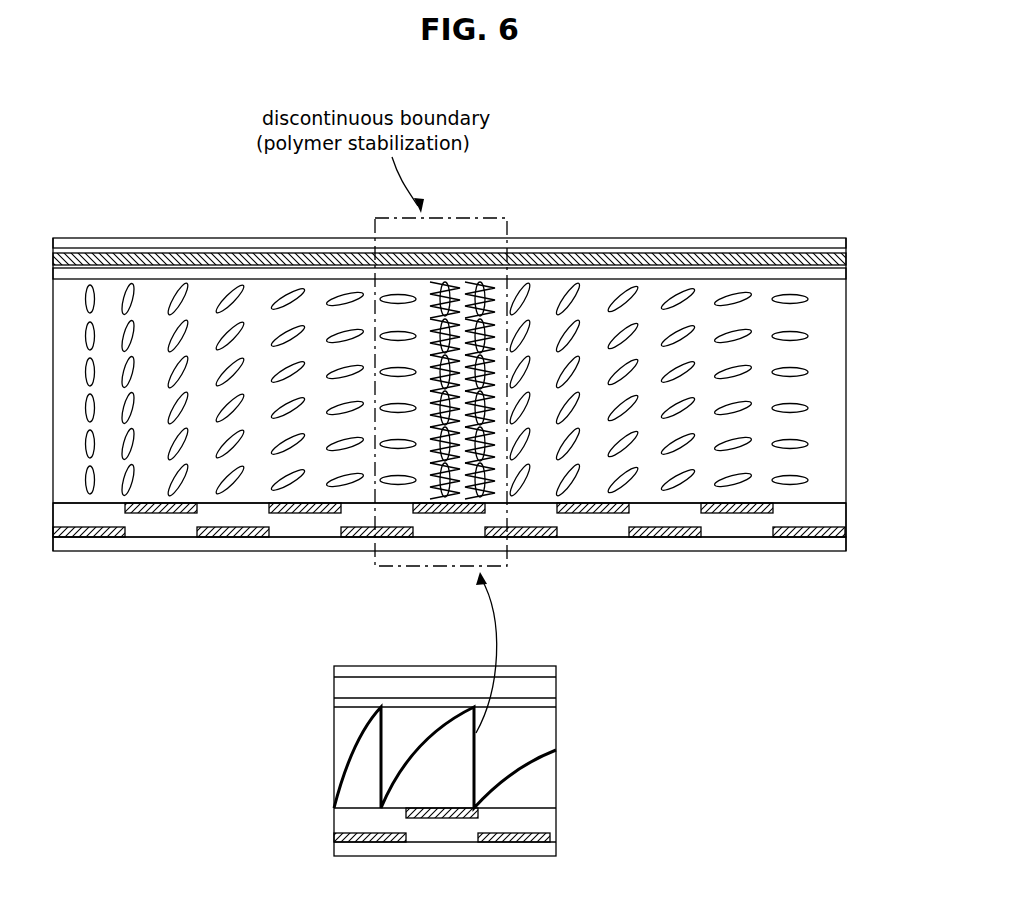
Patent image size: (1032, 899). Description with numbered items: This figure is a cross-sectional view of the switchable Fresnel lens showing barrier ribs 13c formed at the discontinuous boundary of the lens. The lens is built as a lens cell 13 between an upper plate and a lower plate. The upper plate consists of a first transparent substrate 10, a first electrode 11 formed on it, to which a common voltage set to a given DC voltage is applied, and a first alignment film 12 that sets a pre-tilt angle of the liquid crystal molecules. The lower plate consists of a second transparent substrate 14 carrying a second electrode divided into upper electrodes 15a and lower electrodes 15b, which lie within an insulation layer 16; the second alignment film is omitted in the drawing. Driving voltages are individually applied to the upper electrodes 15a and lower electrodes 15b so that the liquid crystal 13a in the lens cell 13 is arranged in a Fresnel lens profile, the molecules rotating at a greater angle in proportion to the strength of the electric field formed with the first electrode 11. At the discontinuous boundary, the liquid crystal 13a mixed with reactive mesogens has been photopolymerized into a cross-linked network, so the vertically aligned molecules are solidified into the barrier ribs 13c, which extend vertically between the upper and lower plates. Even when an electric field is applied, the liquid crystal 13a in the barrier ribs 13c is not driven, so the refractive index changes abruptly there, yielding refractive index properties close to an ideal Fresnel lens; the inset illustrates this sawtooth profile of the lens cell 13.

The first transparent substrate 10 is at (848, 237).
The first electrode 11 is at (846, 251).
The first alignment film 12 is at (840, 273).
The lens cell 13 is at (838, 391).
The liquid crystal 13a is at (808, 336).
The barrier ribs 13c is at (492, 292).
The second transparent substrate 14 is at (838, 541).
The upper electrodes 15a is at (740, 513).
The lower electrodes 15b is at (805, 537).
The insulation layer 16 is at (838, 510).